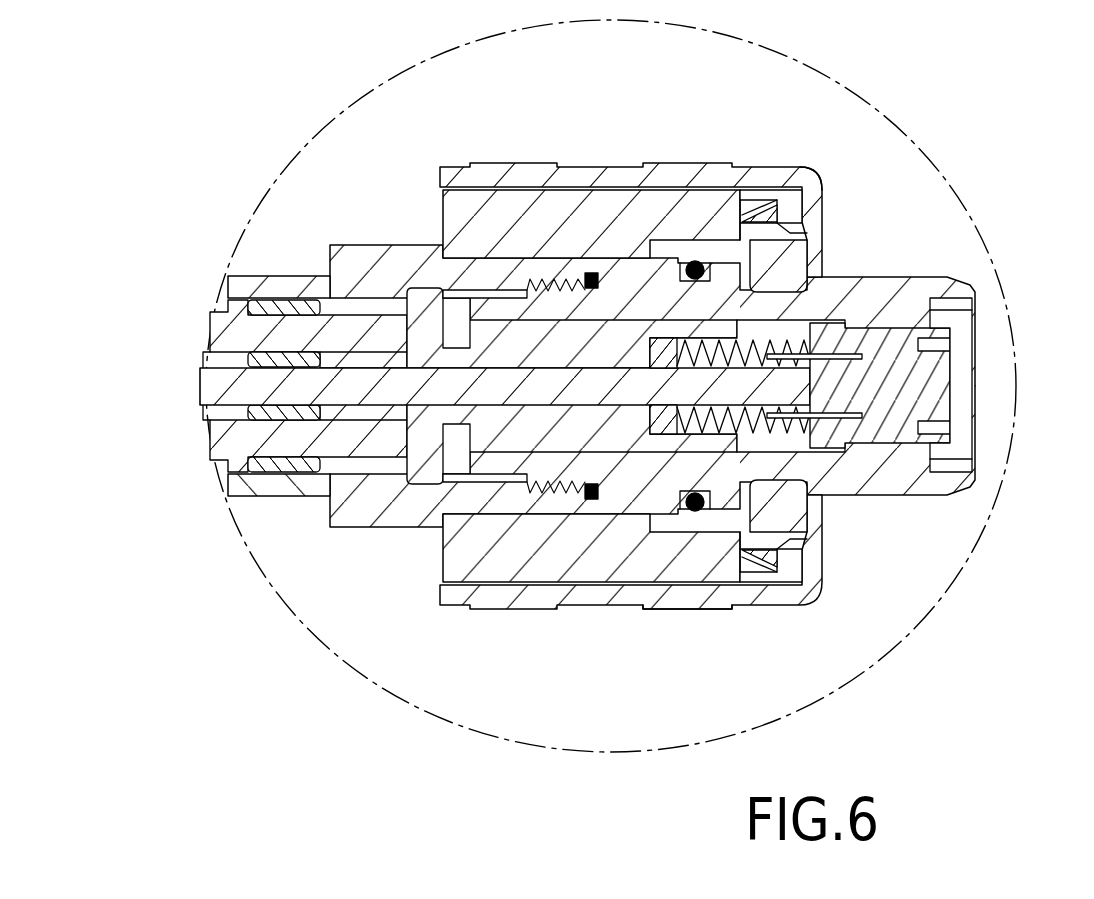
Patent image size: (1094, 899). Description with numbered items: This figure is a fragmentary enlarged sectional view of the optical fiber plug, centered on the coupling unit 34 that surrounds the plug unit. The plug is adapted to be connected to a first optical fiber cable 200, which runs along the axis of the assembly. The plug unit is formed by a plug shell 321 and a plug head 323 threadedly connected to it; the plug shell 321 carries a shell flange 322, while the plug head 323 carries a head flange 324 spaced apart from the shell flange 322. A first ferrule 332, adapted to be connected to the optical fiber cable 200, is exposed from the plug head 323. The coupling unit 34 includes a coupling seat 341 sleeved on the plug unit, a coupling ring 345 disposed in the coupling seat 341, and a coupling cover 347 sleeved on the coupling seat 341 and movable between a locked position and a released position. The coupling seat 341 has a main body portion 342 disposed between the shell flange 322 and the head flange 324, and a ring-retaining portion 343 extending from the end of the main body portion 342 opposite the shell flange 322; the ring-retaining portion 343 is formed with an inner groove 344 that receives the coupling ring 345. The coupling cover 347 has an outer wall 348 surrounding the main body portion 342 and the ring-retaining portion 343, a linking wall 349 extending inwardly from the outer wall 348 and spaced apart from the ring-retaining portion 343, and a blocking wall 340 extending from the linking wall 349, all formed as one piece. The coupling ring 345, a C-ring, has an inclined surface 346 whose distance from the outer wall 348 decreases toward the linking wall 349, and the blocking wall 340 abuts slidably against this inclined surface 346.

The coupling unit 34 is at (607, 148).
The first optical fiber cable 200 is at (210, 384).
The plug shell 321 is at (265, 500).
The shell flange 322 is at (372, 530).
The plug head 323 is at (912, 500).
The head flange 324 is at (667, 252).
The first ferrule 332 is at (945, 388).
The blocking wall 340 is at (782, 244).
The coupling seat 341 is at (488, 187).
The main body portion 342 is at (447, 267).
The ring-retaining portion 343 is at (753, 193).
The inner groove 344 is at (763, 207).
The coupling ring 345 is at (752, 582).
The inclined surface 346 is at (750, 577).
The coupling cover 347 is at (590, 612).
The outer wall 348 is at (680, 613).
The linking wall 349 is at (822, 207).